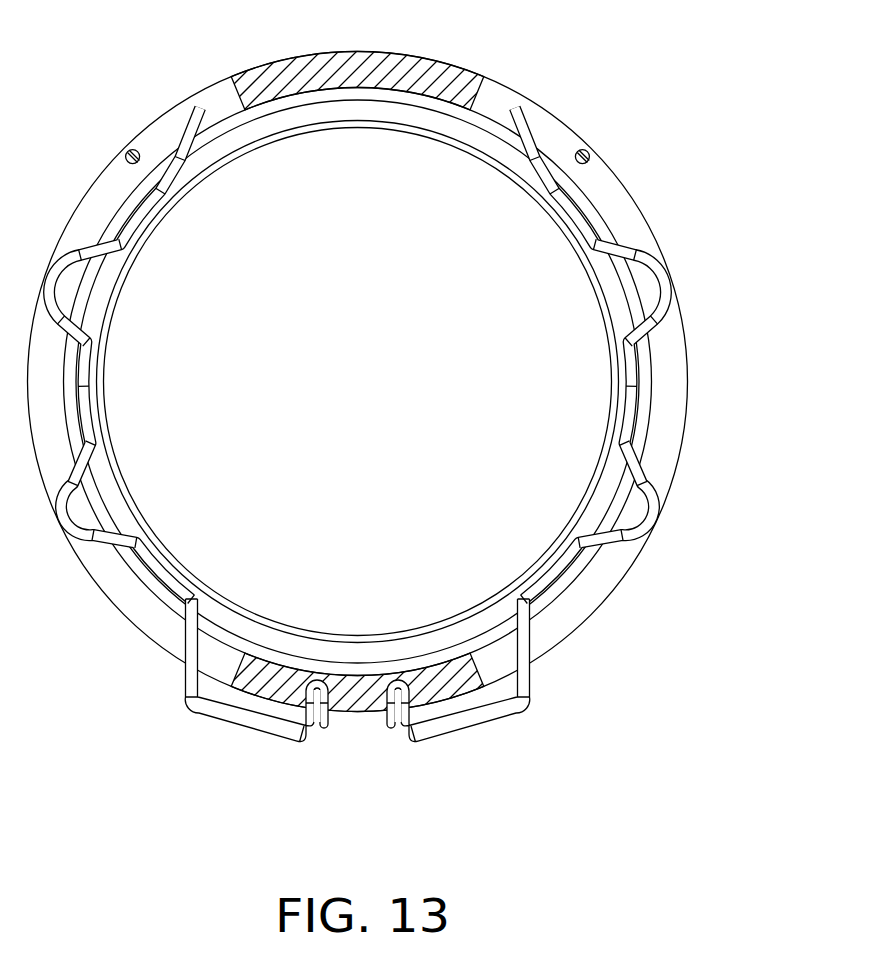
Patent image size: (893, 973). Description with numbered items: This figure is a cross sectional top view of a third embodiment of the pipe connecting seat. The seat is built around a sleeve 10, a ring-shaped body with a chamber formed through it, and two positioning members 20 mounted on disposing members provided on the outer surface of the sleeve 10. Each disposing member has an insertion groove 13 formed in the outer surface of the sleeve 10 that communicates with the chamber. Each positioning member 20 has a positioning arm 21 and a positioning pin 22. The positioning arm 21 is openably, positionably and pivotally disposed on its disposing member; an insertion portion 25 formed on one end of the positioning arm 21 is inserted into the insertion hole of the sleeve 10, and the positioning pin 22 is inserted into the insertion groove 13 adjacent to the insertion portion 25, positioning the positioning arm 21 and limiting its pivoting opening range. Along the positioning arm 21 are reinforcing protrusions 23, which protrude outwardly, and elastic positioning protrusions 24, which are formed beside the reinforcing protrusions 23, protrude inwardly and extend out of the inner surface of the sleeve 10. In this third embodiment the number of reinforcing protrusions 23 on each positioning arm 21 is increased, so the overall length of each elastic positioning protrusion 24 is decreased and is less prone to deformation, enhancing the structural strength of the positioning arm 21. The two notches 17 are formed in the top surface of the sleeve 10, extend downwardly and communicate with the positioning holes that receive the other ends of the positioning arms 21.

The sleeve 10 is at (422, 72).
The insertion groove 13 is at (626, 213).
The notch 17 is at (325, 703).
The positioning member 20 is at (137, 108).
The positioning arm 21 is at (650, 388).
The positioning pin 22 is at (590, 152).
The reinforcing protrusion 23 is at (660, 287).
The elastic positioning protrusion 24 is at (575, 215).
The insertion portion 25 is at (514, 105).